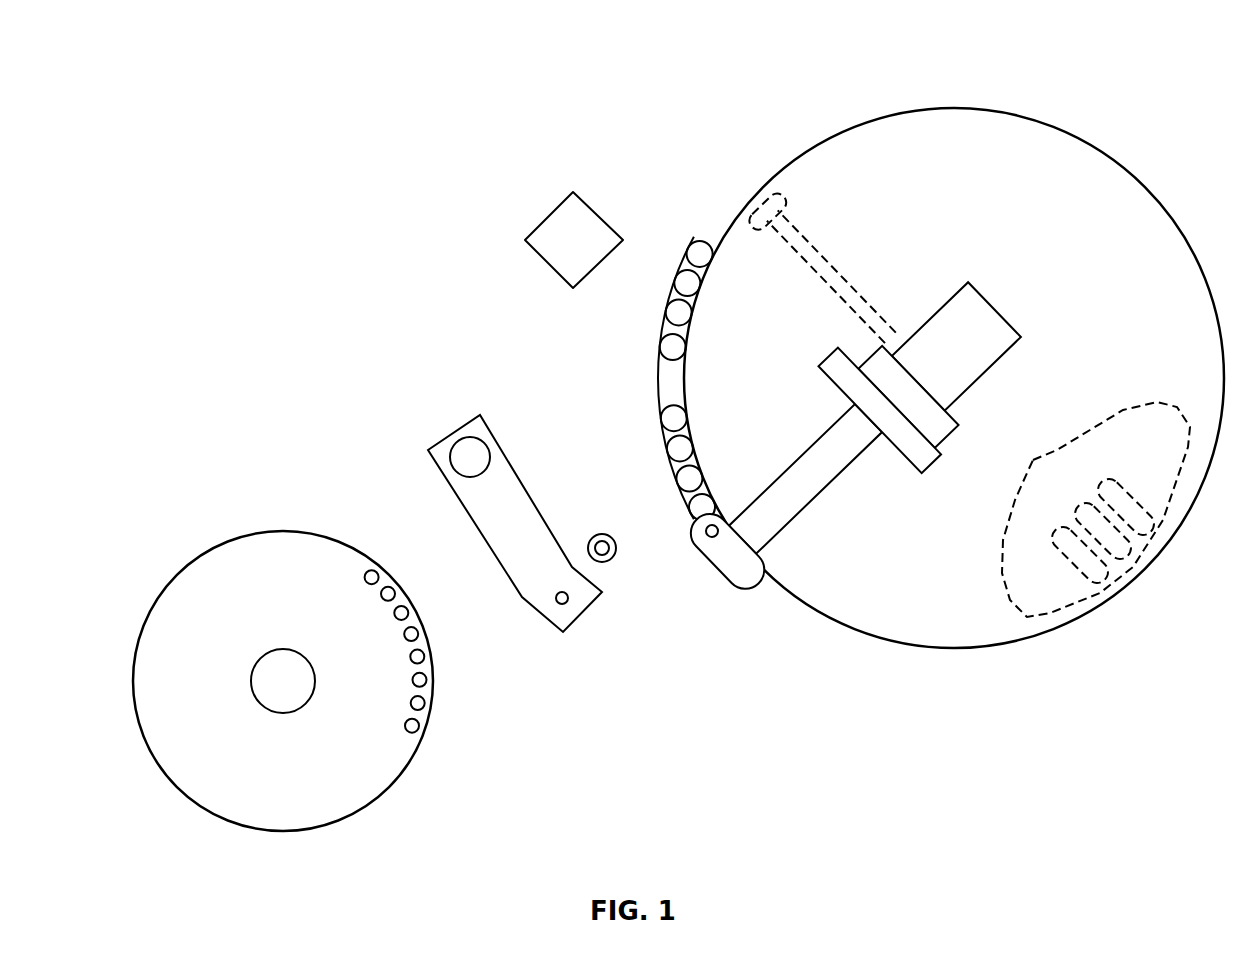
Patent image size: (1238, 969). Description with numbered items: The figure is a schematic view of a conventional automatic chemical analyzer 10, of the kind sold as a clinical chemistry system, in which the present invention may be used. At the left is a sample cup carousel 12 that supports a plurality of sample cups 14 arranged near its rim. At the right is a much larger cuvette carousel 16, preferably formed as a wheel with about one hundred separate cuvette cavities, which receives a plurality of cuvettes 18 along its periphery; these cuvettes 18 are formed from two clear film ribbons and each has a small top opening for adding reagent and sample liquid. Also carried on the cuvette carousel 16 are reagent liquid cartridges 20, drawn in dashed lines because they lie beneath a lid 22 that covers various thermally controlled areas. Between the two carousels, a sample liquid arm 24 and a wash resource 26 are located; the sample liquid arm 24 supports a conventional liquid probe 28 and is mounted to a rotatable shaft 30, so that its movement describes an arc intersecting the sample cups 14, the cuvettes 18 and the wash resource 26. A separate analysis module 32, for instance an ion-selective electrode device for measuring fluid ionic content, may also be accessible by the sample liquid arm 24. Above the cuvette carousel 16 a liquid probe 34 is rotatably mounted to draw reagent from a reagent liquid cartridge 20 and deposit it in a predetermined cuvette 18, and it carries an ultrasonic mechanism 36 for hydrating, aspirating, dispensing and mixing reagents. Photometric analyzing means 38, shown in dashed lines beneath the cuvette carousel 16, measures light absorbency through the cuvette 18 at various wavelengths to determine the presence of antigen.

The automatic chemical analyzer 10 is at (516, 130).
The sample cup carousel 12 is at (283, 681).
The sample cups 14 is at (413, 637).
The cuvette carousel 16 is at (1126, 620).
The cuvettes 18 is at (675, 312).
The reagent liquid cartridges 20 is at (1140, 513).
The lid 22 is at (1096, 503).
The sample liquid arm 24 is at (493, 503).
The wash resource 26 is at (617, 550).
The liquid probe 28 is at (570, 597).
The rotatable shaft 30 is at (472, 460).
The analysis module 32 is at (574, 240).
The liquid probe 34 is at (802, 497).
The ultrasonic mechanism 36 is at (718, 529).
The photometric analyzing means 38 is at (820, 262).